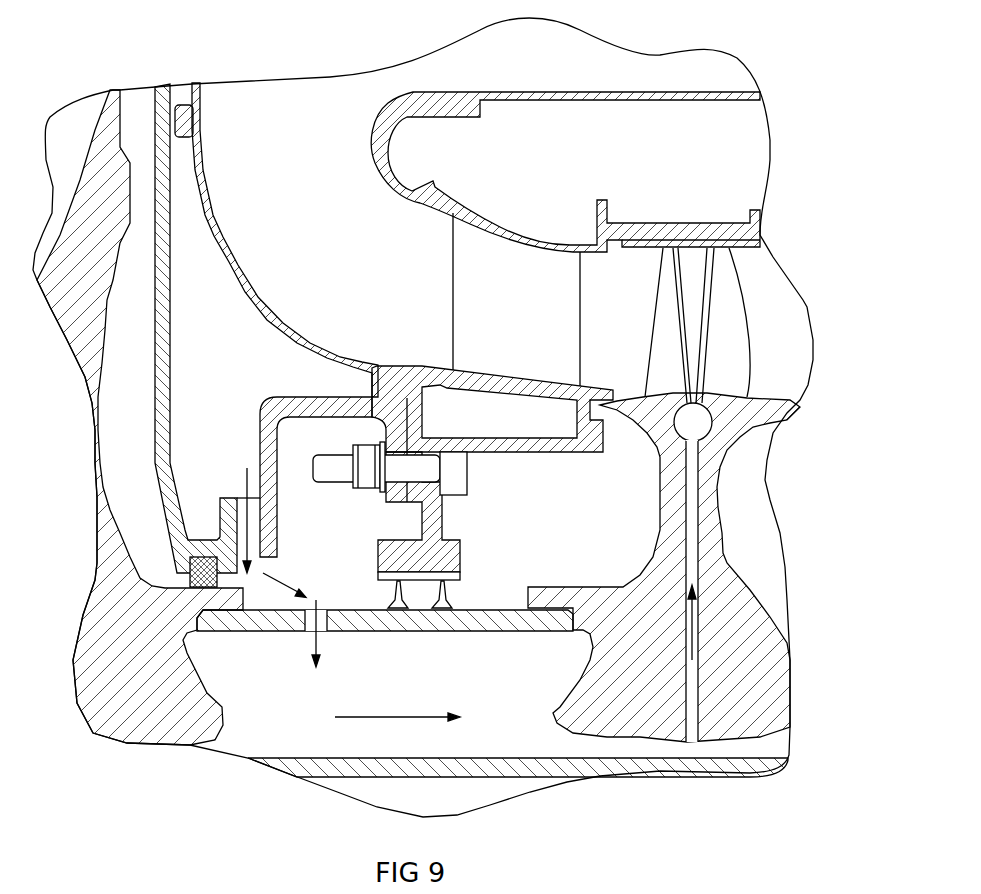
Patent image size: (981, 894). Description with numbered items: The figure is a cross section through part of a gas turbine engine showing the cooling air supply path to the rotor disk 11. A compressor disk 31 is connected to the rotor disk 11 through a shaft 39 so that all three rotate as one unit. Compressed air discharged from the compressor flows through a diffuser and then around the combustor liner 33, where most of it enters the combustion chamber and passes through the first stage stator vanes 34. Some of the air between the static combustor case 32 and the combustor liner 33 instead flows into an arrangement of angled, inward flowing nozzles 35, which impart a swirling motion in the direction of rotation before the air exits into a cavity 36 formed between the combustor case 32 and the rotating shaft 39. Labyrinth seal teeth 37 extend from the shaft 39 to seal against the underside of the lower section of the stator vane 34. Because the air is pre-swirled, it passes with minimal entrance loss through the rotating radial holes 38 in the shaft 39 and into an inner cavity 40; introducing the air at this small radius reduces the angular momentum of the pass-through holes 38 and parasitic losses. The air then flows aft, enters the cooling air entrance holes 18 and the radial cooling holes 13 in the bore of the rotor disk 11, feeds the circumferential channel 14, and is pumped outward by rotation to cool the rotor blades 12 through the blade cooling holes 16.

The rotor disk 11 is at (743, 675).
The rotor blades 12 is at (723, 348).
The radial cooling holes 13 is at (693, 500).
The circumferential channel 14 is at (693, 423).
The blade cooling holes 16 is at (712, 283).
The cooling air entrance holes 18 is at (693, 745).
The compressor disk 31 is at (123, 640).
The combustor case 32 is at (165, 323).
The combustor liner 33 is at (203, 192).
The first stage stator vanes 34 is at (490, 290).
The angled nozzles 35 is at (247, 507).
The cavity 36 is at (290, 577).
The labyrinth seal teeth 37 is at (440, 600).
The rotating radial holes 38 is at (316, 637).
The shaft 39 is at (367, 620).
The inner cavity 40 is at (485, 710).